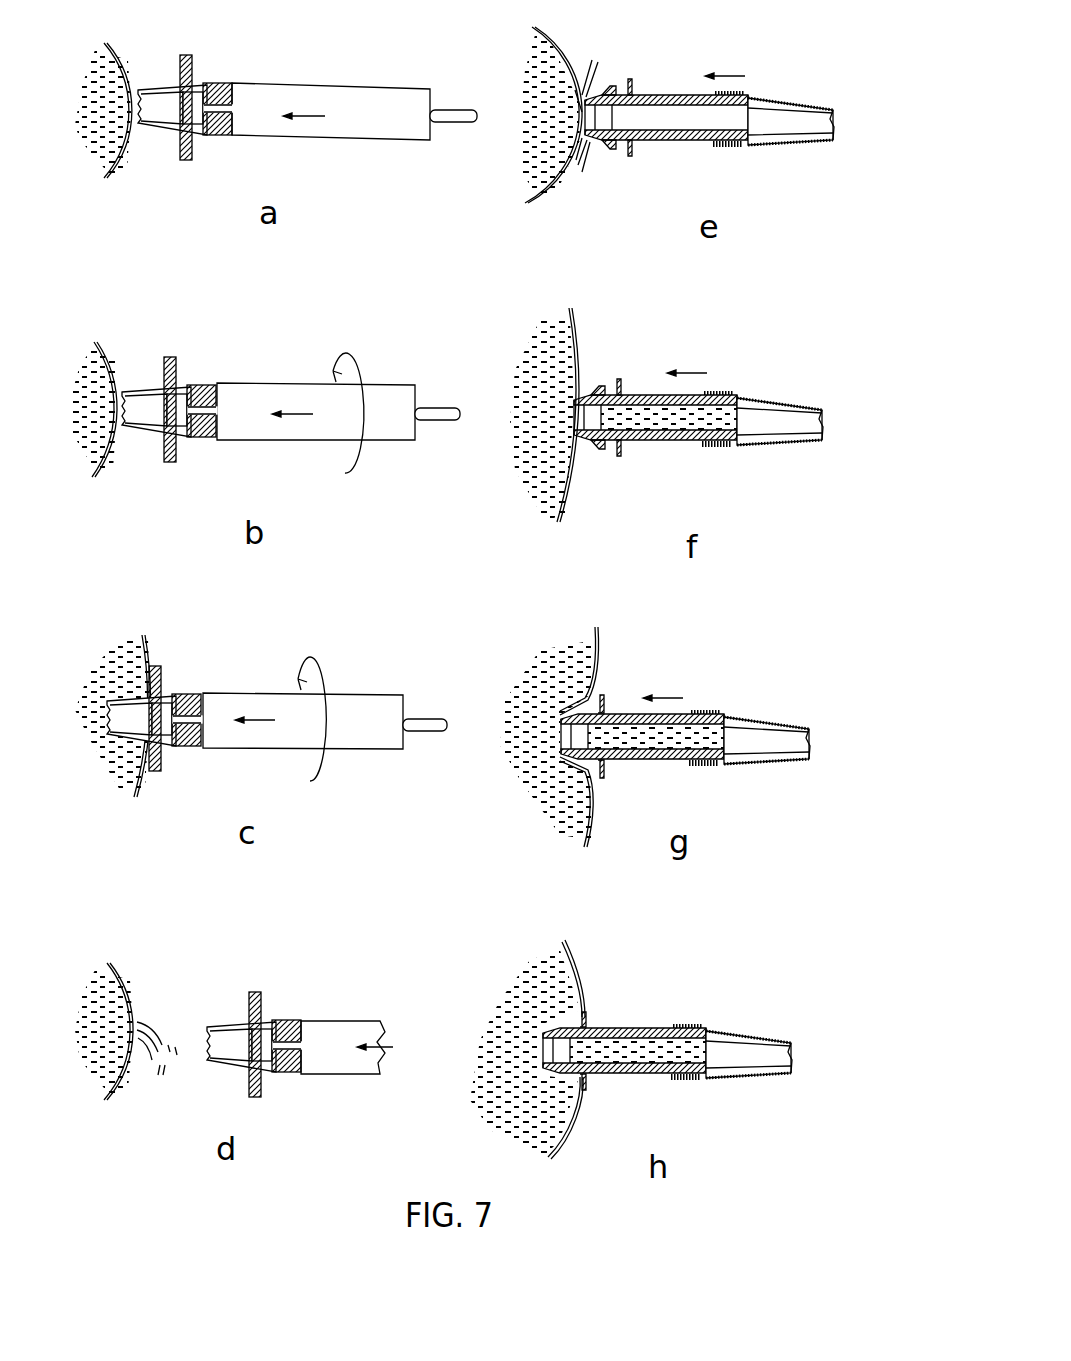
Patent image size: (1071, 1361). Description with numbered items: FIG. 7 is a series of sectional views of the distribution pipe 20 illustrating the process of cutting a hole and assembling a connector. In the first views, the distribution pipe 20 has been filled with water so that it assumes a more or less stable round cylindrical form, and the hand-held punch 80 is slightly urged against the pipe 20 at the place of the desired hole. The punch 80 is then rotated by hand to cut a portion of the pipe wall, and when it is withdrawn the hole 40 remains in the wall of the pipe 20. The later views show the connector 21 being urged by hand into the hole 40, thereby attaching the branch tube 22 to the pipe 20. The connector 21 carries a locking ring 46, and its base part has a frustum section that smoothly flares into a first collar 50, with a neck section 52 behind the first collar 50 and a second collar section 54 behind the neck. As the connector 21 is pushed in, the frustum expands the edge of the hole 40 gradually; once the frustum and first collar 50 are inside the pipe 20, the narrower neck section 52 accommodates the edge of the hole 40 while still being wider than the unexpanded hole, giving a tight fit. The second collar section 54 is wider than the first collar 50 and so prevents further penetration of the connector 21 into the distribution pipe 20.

The distribution pipe 20 is at (117, 56).
The punch 80 is at (307, 107).
The hole 40 is at (147, 1022).
The connector 21 is at (652, 95).
The branch tube 22 is at (785, 103).
The neck section 52 is at (608, 380).
The locking ring 46 is at (720, 390).
The first collar 50 is at (570, 1020).
The second collar section 54 is at (587, 1018).